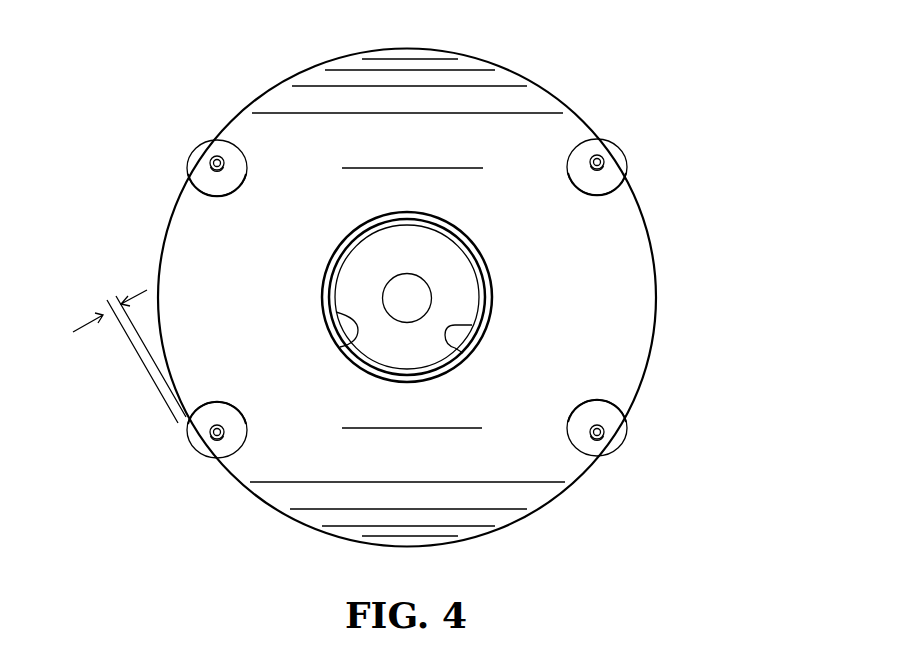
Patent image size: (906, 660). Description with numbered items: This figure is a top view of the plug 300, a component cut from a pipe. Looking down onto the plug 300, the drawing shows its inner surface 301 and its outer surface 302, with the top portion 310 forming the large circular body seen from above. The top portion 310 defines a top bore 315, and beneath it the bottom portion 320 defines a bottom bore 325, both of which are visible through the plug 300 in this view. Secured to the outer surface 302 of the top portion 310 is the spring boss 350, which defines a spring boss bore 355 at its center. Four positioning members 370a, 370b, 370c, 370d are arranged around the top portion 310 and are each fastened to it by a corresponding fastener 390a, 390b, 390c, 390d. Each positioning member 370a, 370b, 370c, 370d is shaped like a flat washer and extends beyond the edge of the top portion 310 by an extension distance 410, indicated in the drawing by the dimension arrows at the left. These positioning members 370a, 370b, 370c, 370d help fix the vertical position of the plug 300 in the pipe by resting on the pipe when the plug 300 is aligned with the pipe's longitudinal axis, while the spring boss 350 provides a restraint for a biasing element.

The plug 300 is at (186, 82).
The inner surface 301 is at (373, 252).
The outer surface 302 is at (367, 115).
The top portion 310 is at (532, 127).
The top bore 315 is at (472, 325).
The bottom portion 320 is at (383, 345).
The bottom bore 325 is at (430, 312).
The spring boss 350 is at (465, 365).
The spring boss bore 355 is at (338, 312).
The positioning member 370a is at (617, 433).
The positioning member 370b is at (197, 430).
The positioning member 370c is at (217, 179).
The positioning member 370d is at (608, 152).
The fastener 390a is at (598, 437).
The fastener 390b is at (213, 440).
The fastener 390c is at (213, 163).
The fastener 390d is at (600, 167).
The extension distance 410 is at (107, 303).